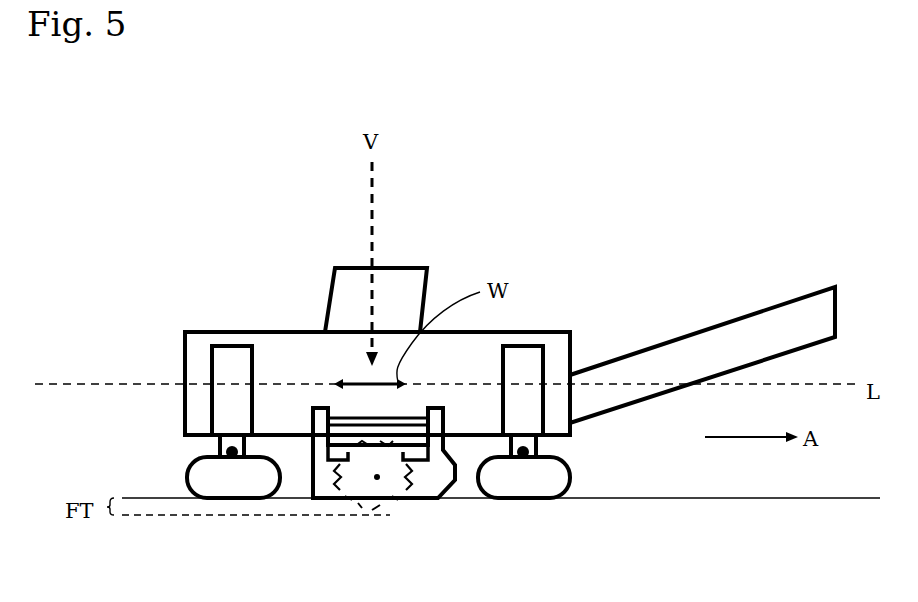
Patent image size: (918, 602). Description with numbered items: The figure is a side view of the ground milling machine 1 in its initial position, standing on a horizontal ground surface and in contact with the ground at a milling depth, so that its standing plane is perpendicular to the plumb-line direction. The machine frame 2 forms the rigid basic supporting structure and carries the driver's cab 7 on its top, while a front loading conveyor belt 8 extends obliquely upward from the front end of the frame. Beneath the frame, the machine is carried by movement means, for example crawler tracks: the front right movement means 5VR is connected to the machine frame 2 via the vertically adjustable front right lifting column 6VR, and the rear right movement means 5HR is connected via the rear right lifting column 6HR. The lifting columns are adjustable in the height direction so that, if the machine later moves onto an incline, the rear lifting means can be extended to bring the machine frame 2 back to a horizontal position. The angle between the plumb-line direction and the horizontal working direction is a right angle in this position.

The ground milling machine 1 is at (584, 146).
The machine frame 2 is at (198, 350).
The rear right movement means 5HR is at (238, 487).
The front right movement means 5VR is at (520, 483).
The rear right lifting column 6HR is at (218, 455).
The front right lifting column 6VR is at (533, 452).
The driver's cab 7 is at (400, 288).
The front loading conveyor belt 8 is at (758, 325).